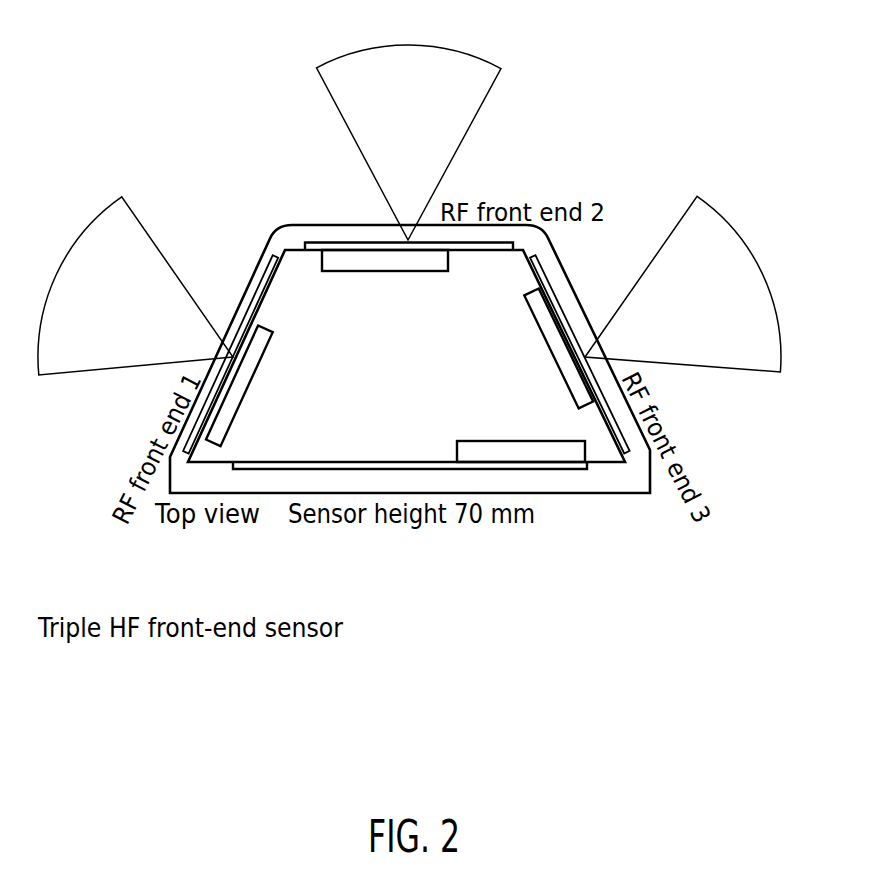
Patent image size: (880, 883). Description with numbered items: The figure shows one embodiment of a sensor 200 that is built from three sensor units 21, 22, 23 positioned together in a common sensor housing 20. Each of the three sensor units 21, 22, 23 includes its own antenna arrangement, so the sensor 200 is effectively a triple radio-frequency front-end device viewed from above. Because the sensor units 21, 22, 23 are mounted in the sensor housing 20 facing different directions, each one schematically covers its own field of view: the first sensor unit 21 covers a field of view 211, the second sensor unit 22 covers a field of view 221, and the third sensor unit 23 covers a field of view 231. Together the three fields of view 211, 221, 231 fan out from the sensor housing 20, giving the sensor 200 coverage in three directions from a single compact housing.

The sensor 200 is at (85, 95).
The sensor housing 20 is at (562, 517).
The sensor unit 21 is at (238, 389).
The sensor unit 22 is at (362, 263).
The sensor unit 23 is at (556, 347).
The field of view 211 is at (165, 225).
The field of view 221 is at (496, 51).
The field of view 231 is at (752, 229).